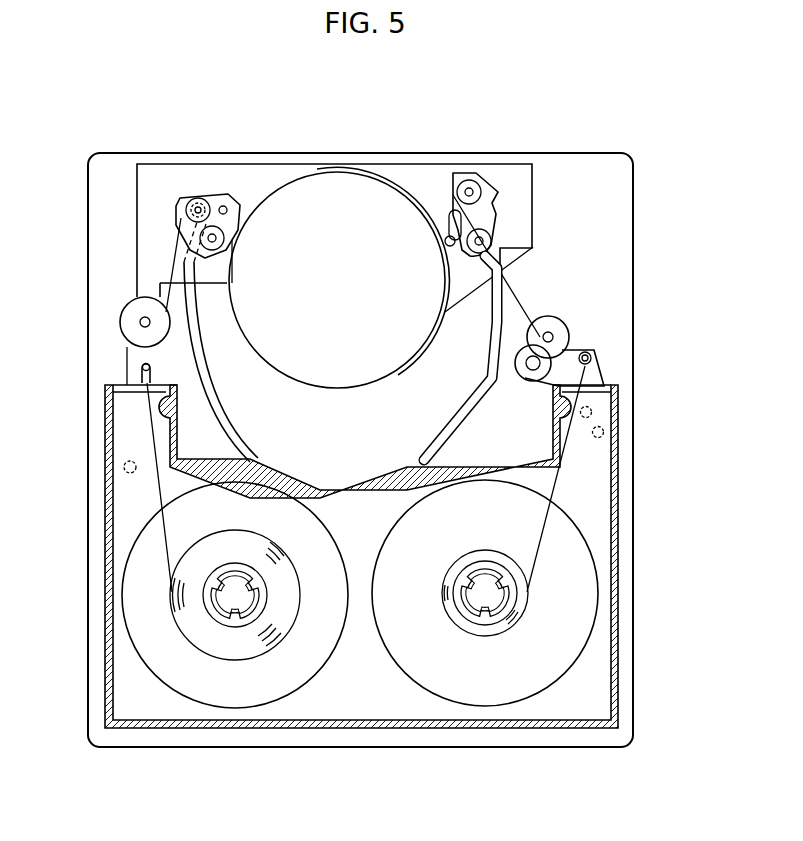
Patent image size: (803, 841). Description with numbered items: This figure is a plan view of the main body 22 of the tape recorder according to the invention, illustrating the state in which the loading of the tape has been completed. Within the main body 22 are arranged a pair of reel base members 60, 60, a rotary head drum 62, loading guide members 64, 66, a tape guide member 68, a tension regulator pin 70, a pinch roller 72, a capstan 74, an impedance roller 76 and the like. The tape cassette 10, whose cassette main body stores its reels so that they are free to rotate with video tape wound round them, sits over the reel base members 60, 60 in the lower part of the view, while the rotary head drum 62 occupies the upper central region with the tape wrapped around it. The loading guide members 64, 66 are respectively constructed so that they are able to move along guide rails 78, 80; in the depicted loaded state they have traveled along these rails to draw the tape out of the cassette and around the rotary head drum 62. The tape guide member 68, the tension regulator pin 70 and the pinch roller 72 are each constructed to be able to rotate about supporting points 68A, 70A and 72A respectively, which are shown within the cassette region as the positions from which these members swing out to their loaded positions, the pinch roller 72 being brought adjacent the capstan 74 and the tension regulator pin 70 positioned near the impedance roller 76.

The tape cassette 10 is at (362, 728).
The main body of the tape recorder 22 is at (636, 203).
The reel base members 60 is at (232, 604).
The rotary head drum 62 is at (386, 200).
The loading guide member 64 is at (221, 192).
The loading guide member 66 is at (494, 177).
The tape guide member 68 is at (591, 350).
The supporting point 68A is at (593, 411).
The tension regulator pin 70 is at (142, 364).
The supporting point 70A is at (126, 464).
The pinch roller 72 is at (604, 374).
The supporting point 72A is at (604, 434).
The capstan 74 is at (565, 322).
The impedance roller 76 is at (119, 324).
The guide rail 78 is at (193, 268).
The guide rail 80 is at (540, 318).